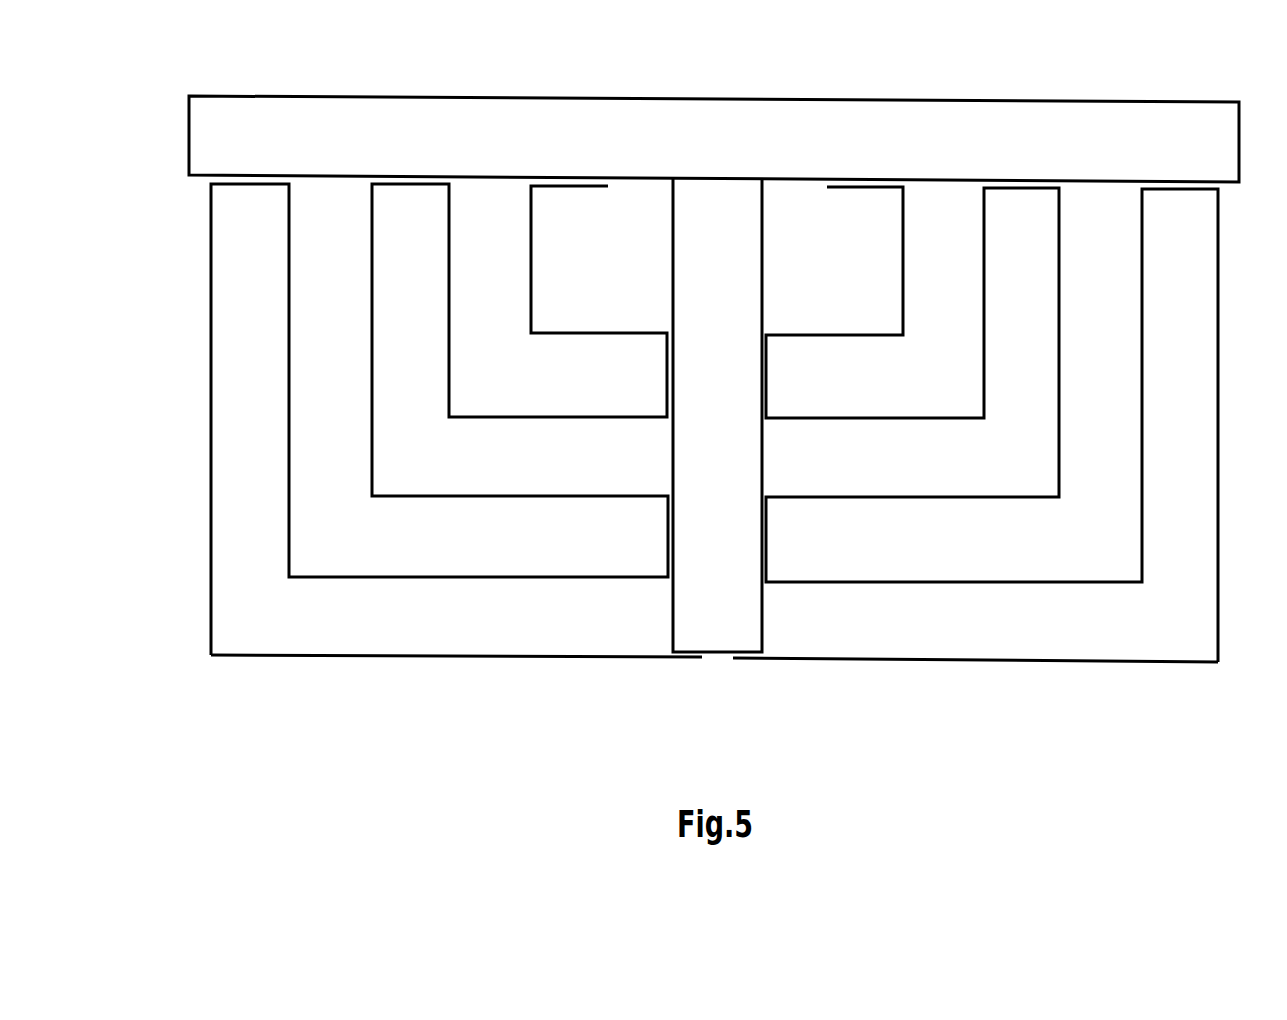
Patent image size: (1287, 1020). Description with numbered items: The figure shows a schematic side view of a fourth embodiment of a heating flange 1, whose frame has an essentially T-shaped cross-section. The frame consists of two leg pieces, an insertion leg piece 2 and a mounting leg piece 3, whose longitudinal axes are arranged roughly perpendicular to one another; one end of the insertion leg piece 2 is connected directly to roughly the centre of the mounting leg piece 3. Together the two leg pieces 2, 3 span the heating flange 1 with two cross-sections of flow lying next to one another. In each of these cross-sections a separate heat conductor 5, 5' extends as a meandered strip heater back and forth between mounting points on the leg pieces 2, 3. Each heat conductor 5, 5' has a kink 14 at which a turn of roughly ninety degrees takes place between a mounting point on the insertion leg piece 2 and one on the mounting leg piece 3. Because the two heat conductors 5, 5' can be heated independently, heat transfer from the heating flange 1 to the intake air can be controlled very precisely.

The heating flange 1 is at (336, 697).
The insertion leg piece 2 is at (712, 642).
The mounting leg piece 3 is at (980, 120).
The heat conductor 5 is at (410, 419).
The heat conductor 5' is at (1024, 424).
The kink 14 is at (211, 655).